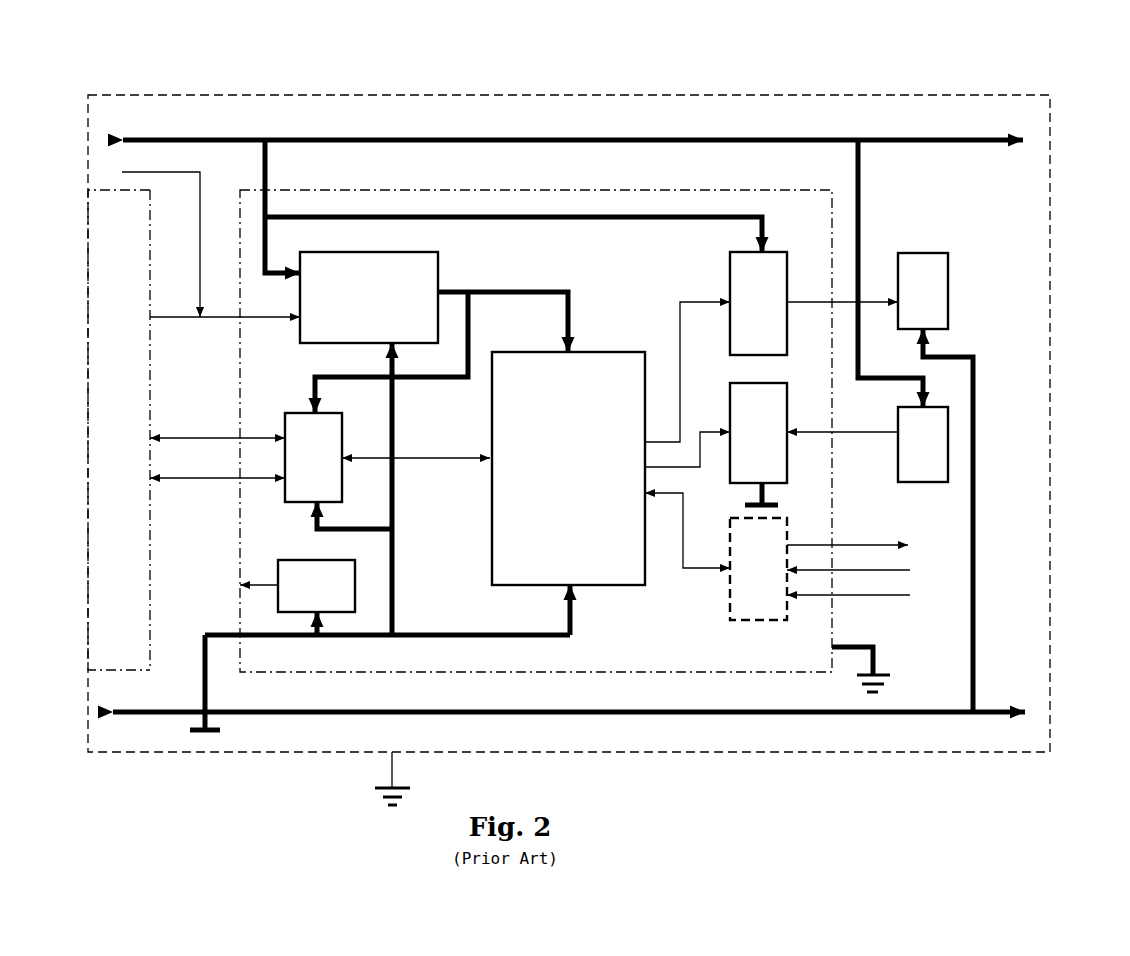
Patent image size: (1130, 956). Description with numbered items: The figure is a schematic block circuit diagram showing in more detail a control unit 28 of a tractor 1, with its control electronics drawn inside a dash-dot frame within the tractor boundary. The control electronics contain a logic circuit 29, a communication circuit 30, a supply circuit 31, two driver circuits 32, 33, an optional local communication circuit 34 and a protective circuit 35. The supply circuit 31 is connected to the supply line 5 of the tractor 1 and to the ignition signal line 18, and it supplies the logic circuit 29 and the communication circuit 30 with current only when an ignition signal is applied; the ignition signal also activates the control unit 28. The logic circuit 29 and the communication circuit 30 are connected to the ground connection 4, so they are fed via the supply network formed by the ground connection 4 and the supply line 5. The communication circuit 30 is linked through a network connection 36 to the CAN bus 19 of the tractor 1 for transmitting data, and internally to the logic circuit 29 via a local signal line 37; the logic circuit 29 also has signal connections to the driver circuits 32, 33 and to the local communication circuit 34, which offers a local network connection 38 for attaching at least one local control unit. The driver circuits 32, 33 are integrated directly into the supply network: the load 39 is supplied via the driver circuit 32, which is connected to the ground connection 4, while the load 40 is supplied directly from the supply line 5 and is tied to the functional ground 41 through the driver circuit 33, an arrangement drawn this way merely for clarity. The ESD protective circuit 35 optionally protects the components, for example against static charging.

The tractor 1 is at (488, 95).
The ground connection 4 is at (570, 712).
The supply line 5 is at (388, 138).
The ignition signal line 18 is at (200, 190).
The CAN bus 19 is at (192, 478).
The control unit 28 is at (675, 190).
The logic circuit 29 is at (568, 468).
The communication circuit 30 is at (313, 457).
The supply circuit 31 is at (369, 297).
The driver circuit 32 is at (716, 347).
The driver circuit 33 is at (771, 433).
The optional local communication circuit 34 is at (716, 556).
The protective circuit 35 is at (297, 586).
The network connection 36 is at (262, 429).
The local signal line 37 is at (425, 457).
The local network connection 38 is at (942, 587).
The load 39 is at (867, 291).
The load 40 is at (923, 444).
The functional ground 41 is at (775, 505).